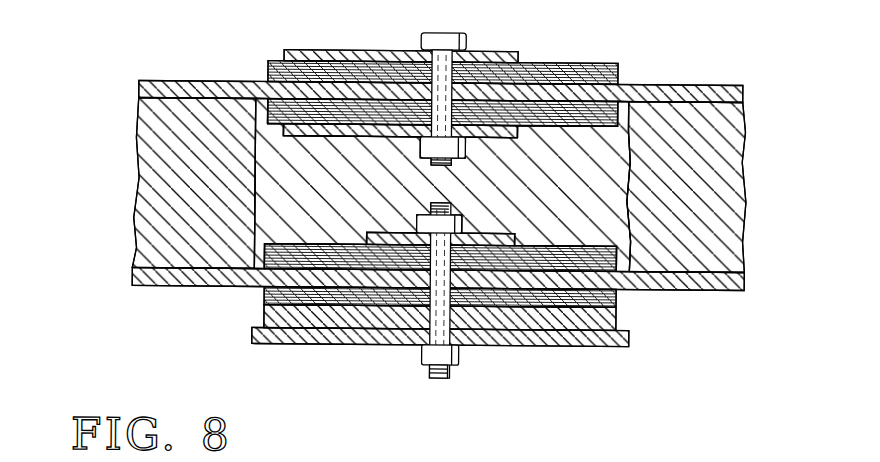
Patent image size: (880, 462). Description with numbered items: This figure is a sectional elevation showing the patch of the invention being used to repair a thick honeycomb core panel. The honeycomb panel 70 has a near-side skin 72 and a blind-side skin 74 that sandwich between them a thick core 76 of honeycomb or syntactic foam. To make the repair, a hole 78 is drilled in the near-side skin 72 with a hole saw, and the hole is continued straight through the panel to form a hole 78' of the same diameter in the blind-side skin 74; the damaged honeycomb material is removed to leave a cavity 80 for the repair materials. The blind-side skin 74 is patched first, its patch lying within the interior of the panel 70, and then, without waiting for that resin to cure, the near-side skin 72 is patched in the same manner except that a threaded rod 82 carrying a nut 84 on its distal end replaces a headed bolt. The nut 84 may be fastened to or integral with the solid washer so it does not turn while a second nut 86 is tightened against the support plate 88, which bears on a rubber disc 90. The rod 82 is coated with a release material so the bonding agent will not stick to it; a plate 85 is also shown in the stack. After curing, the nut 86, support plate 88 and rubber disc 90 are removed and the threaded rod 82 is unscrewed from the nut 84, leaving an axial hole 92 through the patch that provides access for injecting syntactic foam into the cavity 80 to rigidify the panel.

The honeycomb panel 70 is at (733, 73).
The near-side skin 72 is at (716, 289).
The blind-side skin 74 is at (203, 81).
The thick core 76 is at (715, 201).
The hole 78 is at (439, 326).
The hole 78' is at (442, 72).
The cavity 80 is at (549, 193).
The threaded rod 82 is at (432, 203).
The nut 84 is at (462, 226).
The plate 85 is at (515, 236).
The nut 86 is at (423, 360).
The support plate 88 is at (591, 345).
The rubber disc 90 is at (620, 323).
The axial hole 92 is at (458, 368).